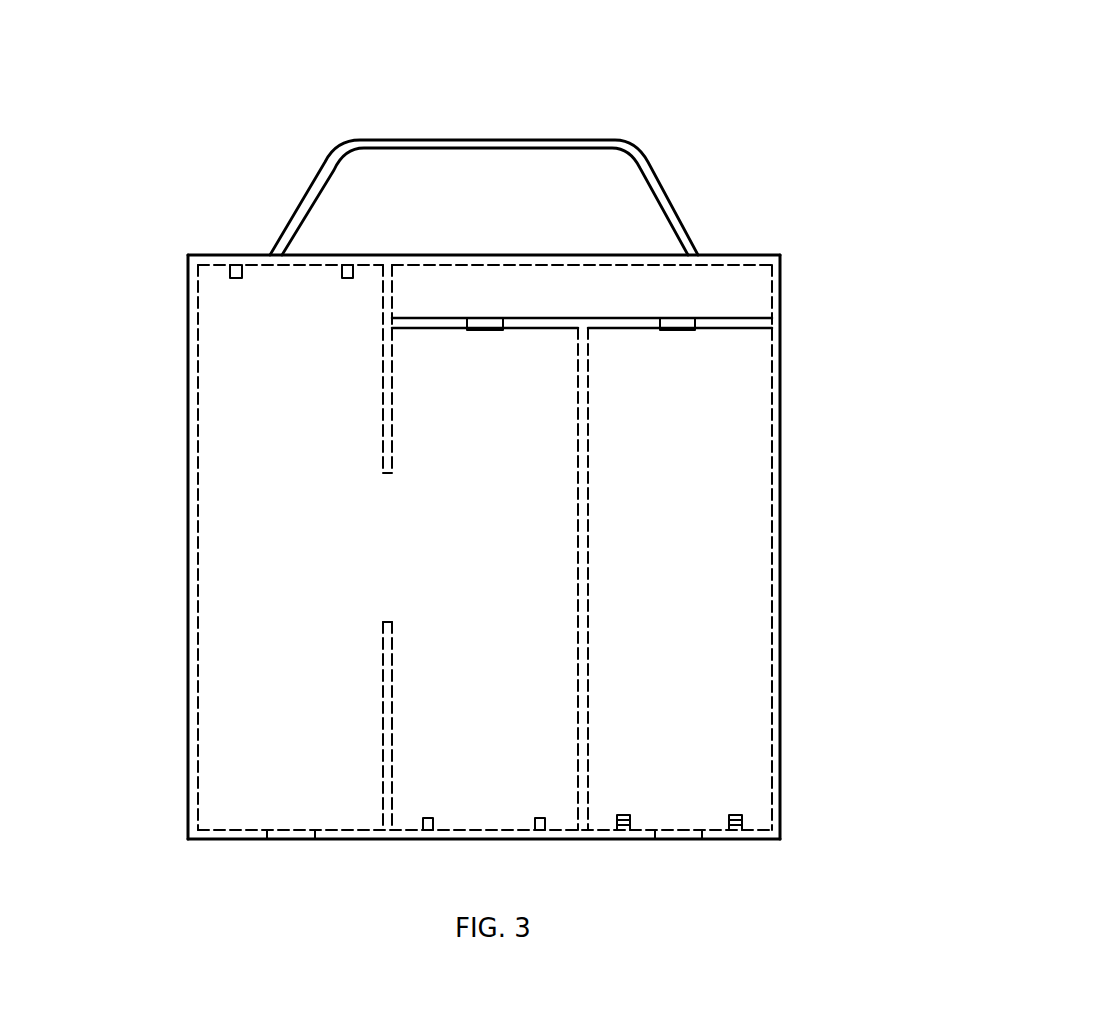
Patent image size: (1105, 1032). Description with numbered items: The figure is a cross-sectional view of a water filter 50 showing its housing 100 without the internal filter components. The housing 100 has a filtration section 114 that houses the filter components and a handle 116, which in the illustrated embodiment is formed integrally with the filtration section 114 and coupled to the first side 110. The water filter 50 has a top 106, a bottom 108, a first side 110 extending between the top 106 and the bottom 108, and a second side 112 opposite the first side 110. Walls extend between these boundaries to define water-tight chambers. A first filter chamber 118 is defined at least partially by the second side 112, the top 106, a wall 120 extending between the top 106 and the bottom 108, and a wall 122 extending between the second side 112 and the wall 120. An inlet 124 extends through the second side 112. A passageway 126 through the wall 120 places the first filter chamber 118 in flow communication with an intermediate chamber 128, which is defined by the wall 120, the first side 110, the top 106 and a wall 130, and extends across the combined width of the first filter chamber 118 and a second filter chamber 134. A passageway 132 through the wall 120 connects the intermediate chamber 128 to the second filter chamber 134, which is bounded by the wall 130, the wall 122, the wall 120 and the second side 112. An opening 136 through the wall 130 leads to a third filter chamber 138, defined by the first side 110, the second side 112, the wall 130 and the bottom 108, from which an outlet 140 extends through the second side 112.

The water filter 50 is at (1014, 64).
The housing 100 is at (781, 256).
The top 106 is at (776, 530).
The bottom 108 is at (187, 640).
The first side 110 is at (712, 254).
The second side 112 is at (598, 843).
The filtration section 114 is at (772, 372).
The handle 116 is at (654, 183).
The first filter chamber 118 is at (706, 530).
The wall 120 is at (620, 330).
The wall 122 is at (585, 484).
The inlet 124 is at (674, 846).
The passageway 126 is at (676, 331).
The intermediate chamber 128 is at (682, 292).
The wall 130 is at (386, 410).
The passageway 132 is at (485, 331).
The second filter chamber 134 is at (531, 540).
The opening 136 is at (399, 521).
The third filter chamber 138 is at (331, 535).
The outlet 140 is at (291, 846).